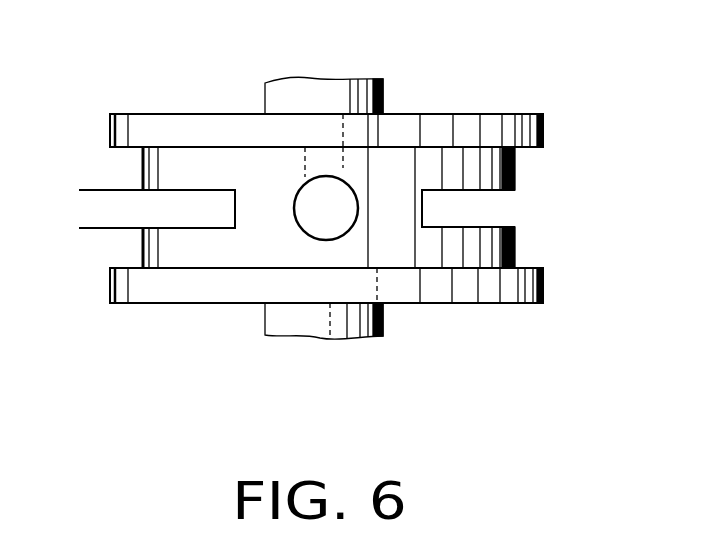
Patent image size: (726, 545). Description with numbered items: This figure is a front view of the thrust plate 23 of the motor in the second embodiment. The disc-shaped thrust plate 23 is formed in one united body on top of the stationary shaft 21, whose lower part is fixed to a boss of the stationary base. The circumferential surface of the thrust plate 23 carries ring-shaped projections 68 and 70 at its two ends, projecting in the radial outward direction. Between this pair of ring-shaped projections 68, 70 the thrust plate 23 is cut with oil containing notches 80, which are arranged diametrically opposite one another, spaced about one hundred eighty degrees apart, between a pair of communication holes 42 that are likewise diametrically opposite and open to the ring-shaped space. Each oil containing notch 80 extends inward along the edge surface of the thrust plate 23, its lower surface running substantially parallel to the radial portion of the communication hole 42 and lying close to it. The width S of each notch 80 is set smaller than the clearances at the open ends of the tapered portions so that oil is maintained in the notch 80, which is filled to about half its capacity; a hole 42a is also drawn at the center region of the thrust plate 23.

The thrust plate 23 is at (136, 110).
The ring-shaped projection 68 is at (503, 113).
The communication hole 42 is at (343, 158).
The hole 42a is at (294, 210).
The oil containing notch 80 is at (480, 192).
The width of oil containing notch S is at (86, 227).
The ring-shaped projection 70 is at (487, 293).
The stationary shaft 21 is at (292, 318).